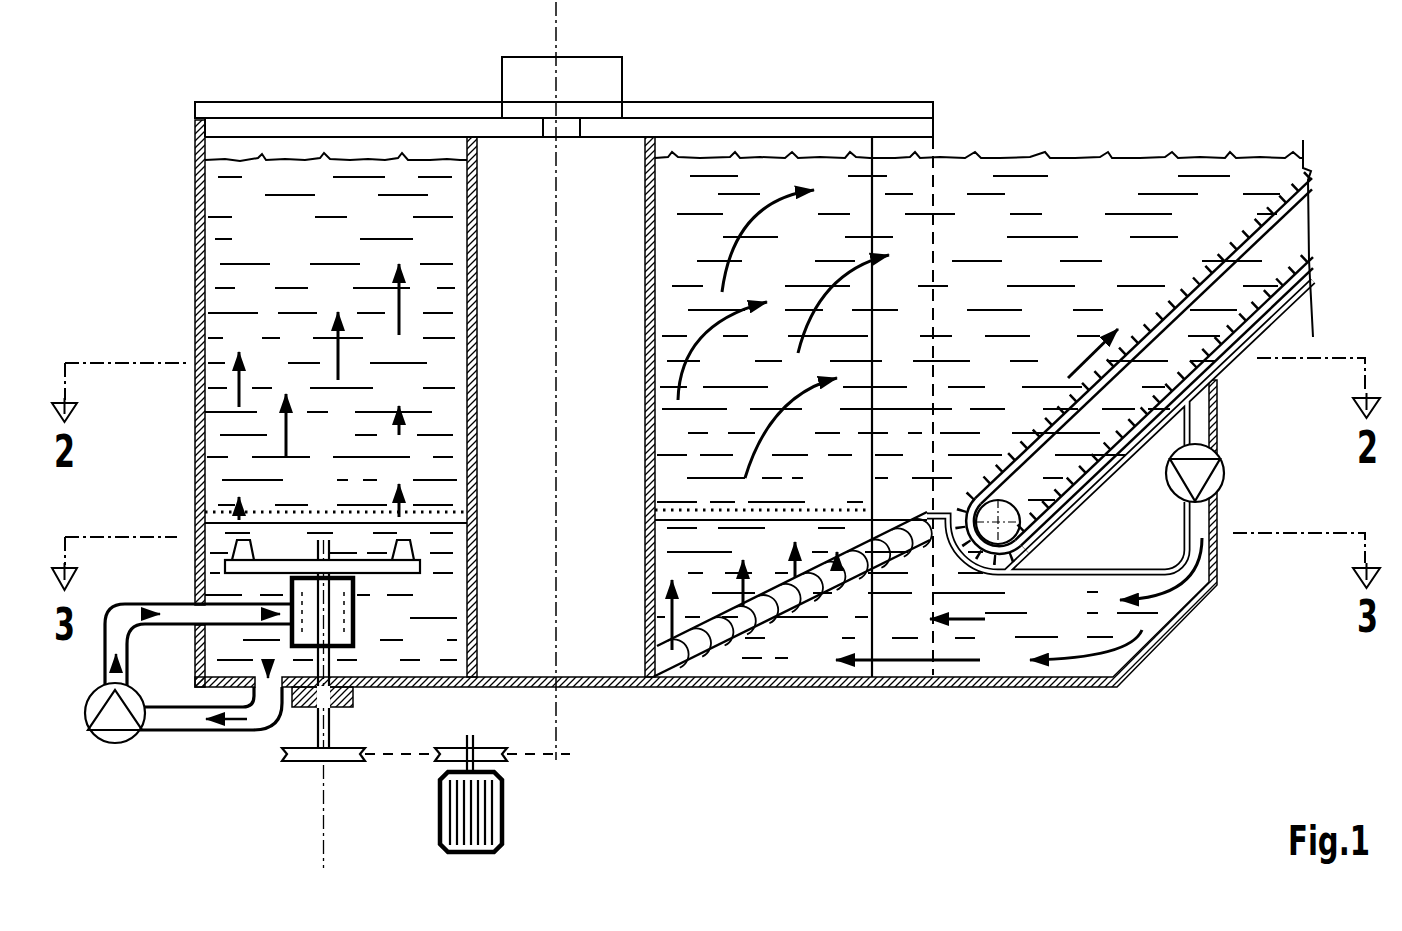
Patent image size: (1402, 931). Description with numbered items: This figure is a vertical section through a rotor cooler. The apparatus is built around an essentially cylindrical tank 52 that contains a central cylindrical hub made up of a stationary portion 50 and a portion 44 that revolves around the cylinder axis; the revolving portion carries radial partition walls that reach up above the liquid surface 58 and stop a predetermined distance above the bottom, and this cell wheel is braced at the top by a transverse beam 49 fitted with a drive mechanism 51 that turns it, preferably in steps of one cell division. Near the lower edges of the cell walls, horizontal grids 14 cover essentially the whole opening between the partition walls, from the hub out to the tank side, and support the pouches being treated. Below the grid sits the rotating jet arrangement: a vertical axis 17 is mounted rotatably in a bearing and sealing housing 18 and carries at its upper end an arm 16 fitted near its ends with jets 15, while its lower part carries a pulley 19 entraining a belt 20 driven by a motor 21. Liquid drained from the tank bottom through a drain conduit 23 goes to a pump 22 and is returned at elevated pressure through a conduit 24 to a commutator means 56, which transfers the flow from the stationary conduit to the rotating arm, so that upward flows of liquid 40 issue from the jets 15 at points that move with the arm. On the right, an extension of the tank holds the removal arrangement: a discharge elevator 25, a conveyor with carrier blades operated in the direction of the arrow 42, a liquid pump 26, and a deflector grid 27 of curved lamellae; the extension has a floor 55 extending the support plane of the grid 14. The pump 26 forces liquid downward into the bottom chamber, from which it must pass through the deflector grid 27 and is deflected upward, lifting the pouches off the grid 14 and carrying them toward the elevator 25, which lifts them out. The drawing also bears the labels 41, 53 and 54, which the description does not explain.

The horizontal grid 14 is at (340, 512).
The jet 15 is at (245, 553).
The arm 16 is at (397, 568).
The vertical axis 17 is at (330, 663).
The bearing and sealing housing 18 is at (345, 707).
The pulley 19 is at (300, 762).
The belt 20 is at (400, 757).
The motor 21 is at (503, 798).
The pump 22 is at (122, 742).
The drain conduit 23 is at (232, 733).
The conduit 24 is at (143, 606).
The discharge elevator 25 is at (1237, 247).
The liquid pump 26 is at (1218, 455).
The deflector grid 27 is at (903, 550).
The upward flows of liquid 40 is at (400, 327).
The inclined chute 41 is at (695, 658).
The arrow 42 is at (1087, 357).
The revolving portion of the hub 44 is at (535, 238).
The transverse beam 49 is at (335, 115).
The stationary portion of the hub 50 is at (535, 605).
The drive mechanism 51 is at (542, 96).
The tank 52 is at (194, 225).
The left chamber 53 is at (292, 238).
The lower left chamber 54 is at (442, 655).
The floor 55 is at (1005, 575).
The commutator means 56 is at (353, 605).
The liquid surface 58 is at (278, 158).